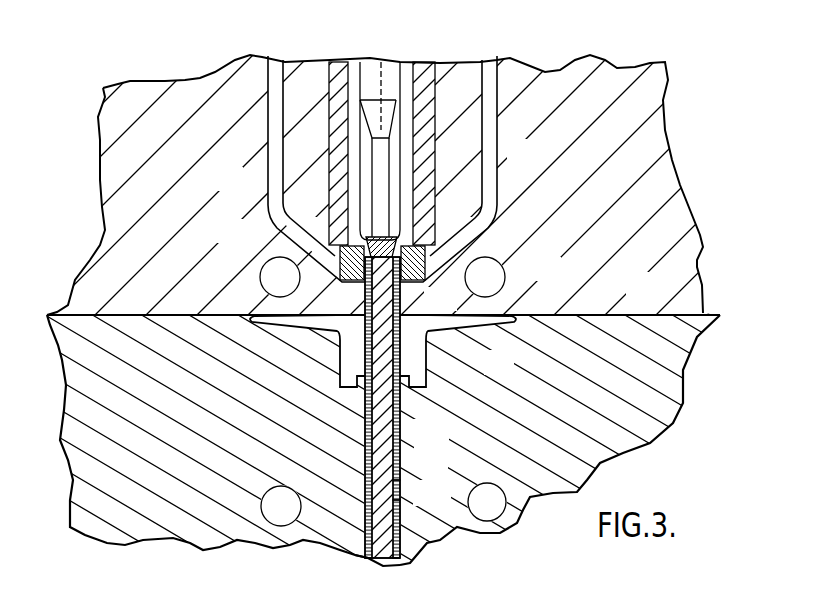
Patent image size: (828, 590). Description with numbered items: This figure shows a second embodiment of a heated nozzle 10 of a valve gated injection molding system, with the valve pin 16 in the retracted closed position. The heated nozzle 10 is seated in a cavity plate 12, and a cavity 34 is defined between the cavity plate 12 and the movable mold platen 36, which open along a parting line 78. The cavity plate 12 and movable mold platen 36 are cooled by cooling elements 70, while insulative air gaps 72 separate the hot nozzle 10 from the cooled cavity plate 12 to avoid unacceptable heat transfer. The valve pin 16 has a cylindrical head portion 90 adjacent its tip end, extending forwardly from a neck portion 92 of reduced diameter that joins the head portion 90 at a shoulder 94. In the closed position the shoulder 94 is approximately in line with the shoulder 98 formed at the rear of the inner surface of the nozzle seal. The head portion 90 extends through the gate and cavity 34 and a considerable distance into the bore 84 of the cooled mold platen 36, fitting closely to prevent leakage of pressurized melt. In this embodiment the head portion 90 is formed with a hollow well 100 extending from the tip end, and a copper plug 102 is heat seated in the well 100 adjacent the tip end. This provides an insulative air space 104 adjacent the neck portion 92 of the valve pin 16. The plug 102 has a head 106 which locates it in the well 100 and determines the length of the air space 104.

The heated nozzle 10 is at (308, 68).
The cavity plate 12 is at (652, 107).
The valve pin 16 is at (377, 68).
The cavity 34 is at (470, 345).
The movable mold platen 36 is at (647, 427).
The cooling elements 70 is at (505, 270).
The insulative air gaps 72 is at (487, 60).
The parting line 78 is at (623, 313).
The bore 84 is at (360, 563).
The head portion 90 is at (400, 445).
The neck portion 92 is at (390, 190).
The shoulder 94 is at (360, 240).
The shoulder 98 is at (357, 252).
The hollow well 100 is at (400, 490).
The copper plug 102 is at (400, 418).
The insulative air space 104 is at (412, 278).
The head 106 is at (405, 565).